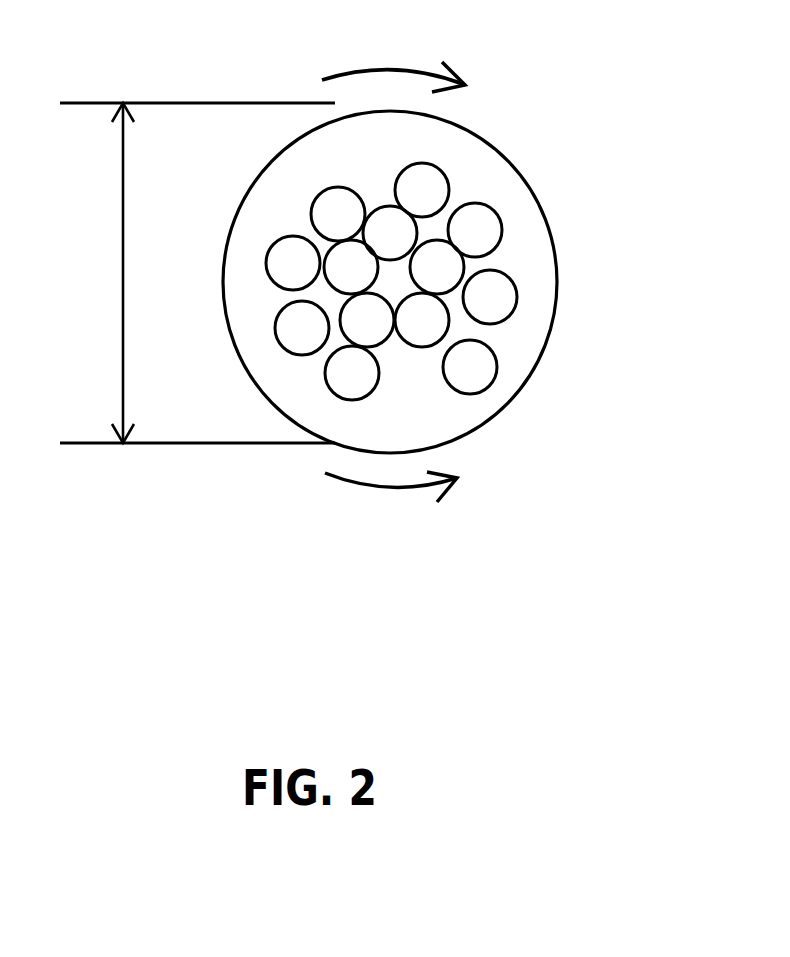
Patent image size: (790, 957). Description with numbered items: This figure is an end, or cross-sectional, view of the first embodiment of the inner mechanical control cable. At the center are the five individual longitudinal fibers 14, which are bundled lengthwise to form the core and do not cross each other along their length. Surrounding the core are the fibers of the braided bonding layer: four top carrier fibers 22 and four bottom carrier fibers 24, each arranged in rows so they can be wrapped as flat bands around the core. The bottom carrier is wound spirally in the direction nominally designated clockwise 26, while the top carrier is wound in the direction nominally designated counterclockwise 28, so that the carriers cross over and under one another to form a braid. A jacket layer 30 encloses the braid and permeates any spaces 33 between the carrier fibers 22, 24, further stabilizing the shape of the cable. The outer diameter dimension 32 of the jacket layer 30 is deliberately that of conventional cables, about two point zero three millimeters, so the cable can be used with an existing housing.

The longitudinal fibers 14 is at (439, 334).
The top carrier fibers 22 is at (487, 381).
The bottom carrier fibers 24 is at (369, 387).
The clockwise direction 26 is at (385, 72).
The counterclockwise direction 28 is at (390, 488).
The jacket layer 30 is at (542, 253).
The outer diameter dimension 32 is at (123, 283).
The spaces 33 is at (377, 193).